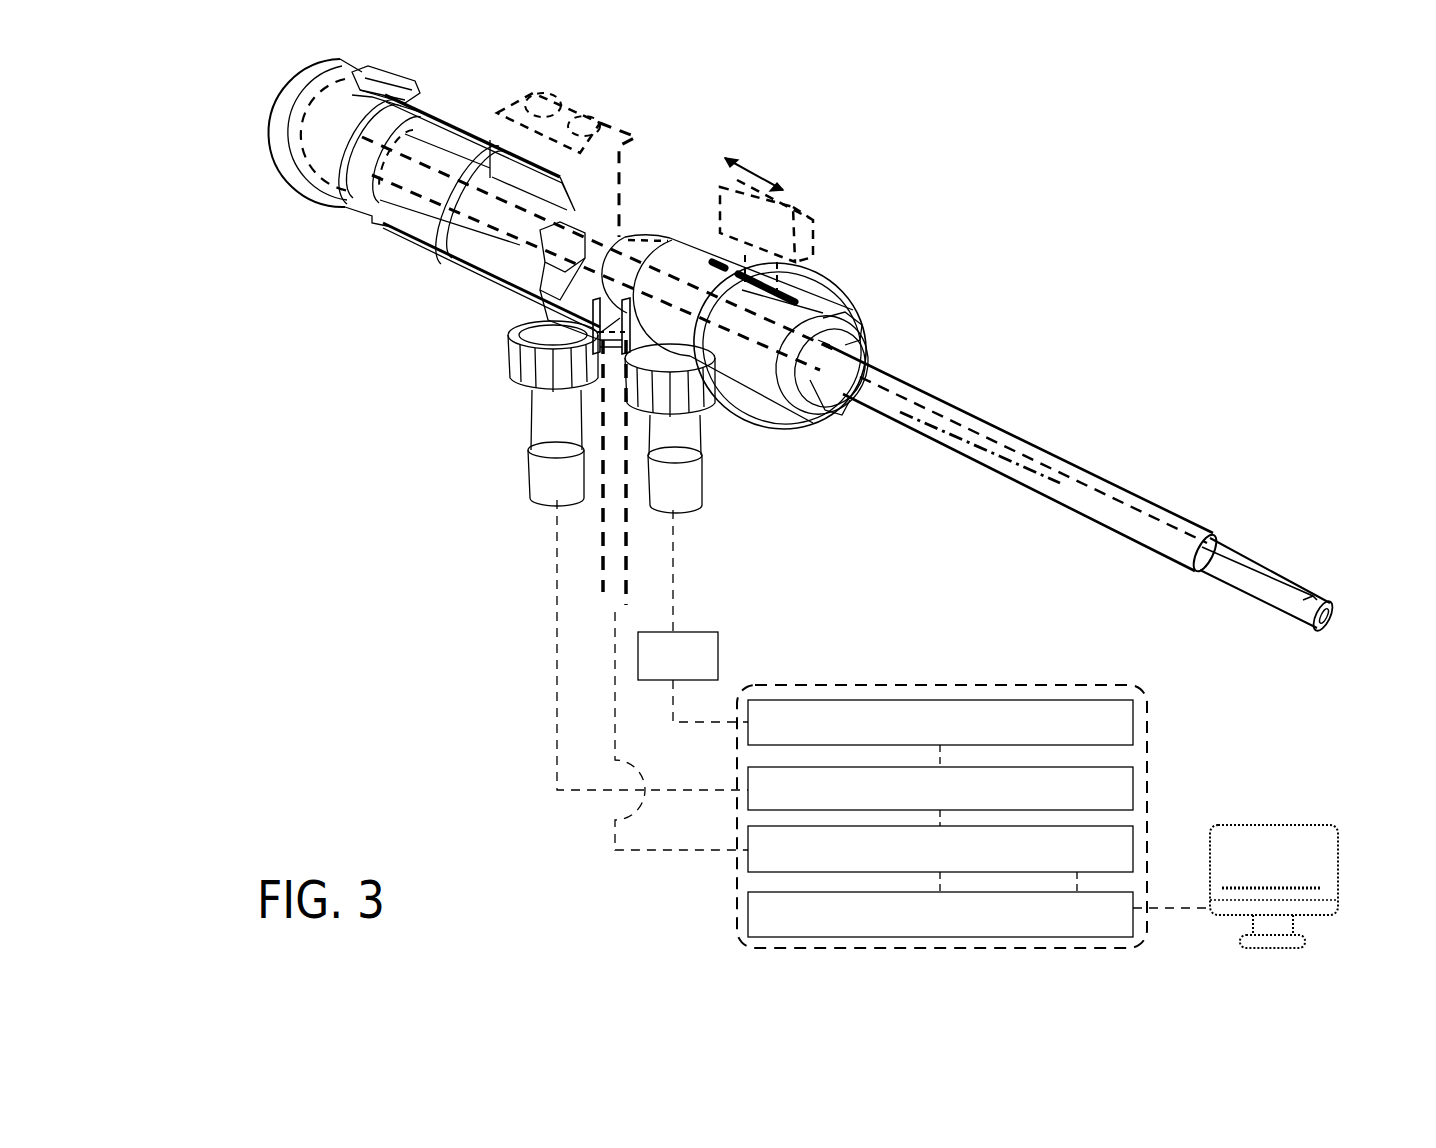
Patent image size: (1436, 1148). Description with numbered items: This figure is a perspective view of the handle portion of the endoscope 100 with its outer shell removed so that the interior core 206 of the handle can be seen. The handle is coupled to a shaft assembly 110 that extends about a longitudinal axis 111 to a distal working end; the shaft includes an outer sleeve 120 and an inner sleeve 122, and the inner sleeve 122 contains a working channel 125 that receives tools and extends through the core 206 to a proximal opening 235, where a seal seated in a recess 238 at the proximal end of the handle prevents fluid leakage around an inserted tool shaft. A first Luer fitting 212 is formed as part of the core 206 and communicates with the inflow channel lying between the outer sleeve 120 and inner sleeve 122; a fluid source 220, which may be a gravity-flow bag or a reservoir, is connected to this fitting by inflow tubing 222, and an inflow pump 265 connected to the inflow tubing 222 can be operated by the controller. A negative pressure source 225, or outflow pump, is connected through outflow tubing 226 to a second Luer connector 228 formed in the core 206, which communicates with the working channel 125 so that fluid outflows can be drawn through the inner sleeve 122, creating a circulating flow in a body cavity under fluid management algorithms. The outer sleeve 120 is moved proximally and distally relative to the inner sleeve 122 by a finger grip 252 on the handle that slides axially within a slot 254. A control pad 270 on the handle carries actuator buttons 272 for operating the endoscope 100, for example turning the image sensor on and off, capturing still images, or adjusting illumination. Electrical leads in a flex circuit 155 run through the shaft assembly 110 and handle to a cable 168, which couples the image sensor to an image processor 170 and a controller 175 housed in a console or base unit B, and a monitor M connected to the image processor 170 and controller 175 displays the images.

The endoscope 100 is at (1015, 175).
The shaft assembly 110 is at (1095, 519).
The longitudinal axis 111 is at (980, 442).
The outer sleeve 120 is at (1120, 488).
The inner sleeve 122 is at (1240, 580).
The working channel 125 is at (1327, 623).
The flex circuit 155 is at (1272, 577).
The cable 168 is at (602, 592).
The image processor 170 is at (940, 914).
The controller 175 is at (940, 849).
The interior core 206 is at (490, 273).
The first Luer fitting 212 is at (690, 473).
The fluid source 220 is at (940, 722).
The inflow tubing 222 is at (675, 548).
The negative pressure source 225 is at (940, 788).
The outflow tubing 226 is at (555, 543).
The second Luer connector 228 is at (548, 457).
The proximal opening 235 is at (355, 153).
The recess 238 is at (353, 74).
The finger grip 252 is at (790, 207).
The slot 254 is at (797, 290).
The inflow pump 265 is at (678, 656).
The control pad 270 is at (570, 112).
The actuator buttons 272 is at (580, 125).
The base unit B is at (973, 787).
The monitor M is at (1322, 860).